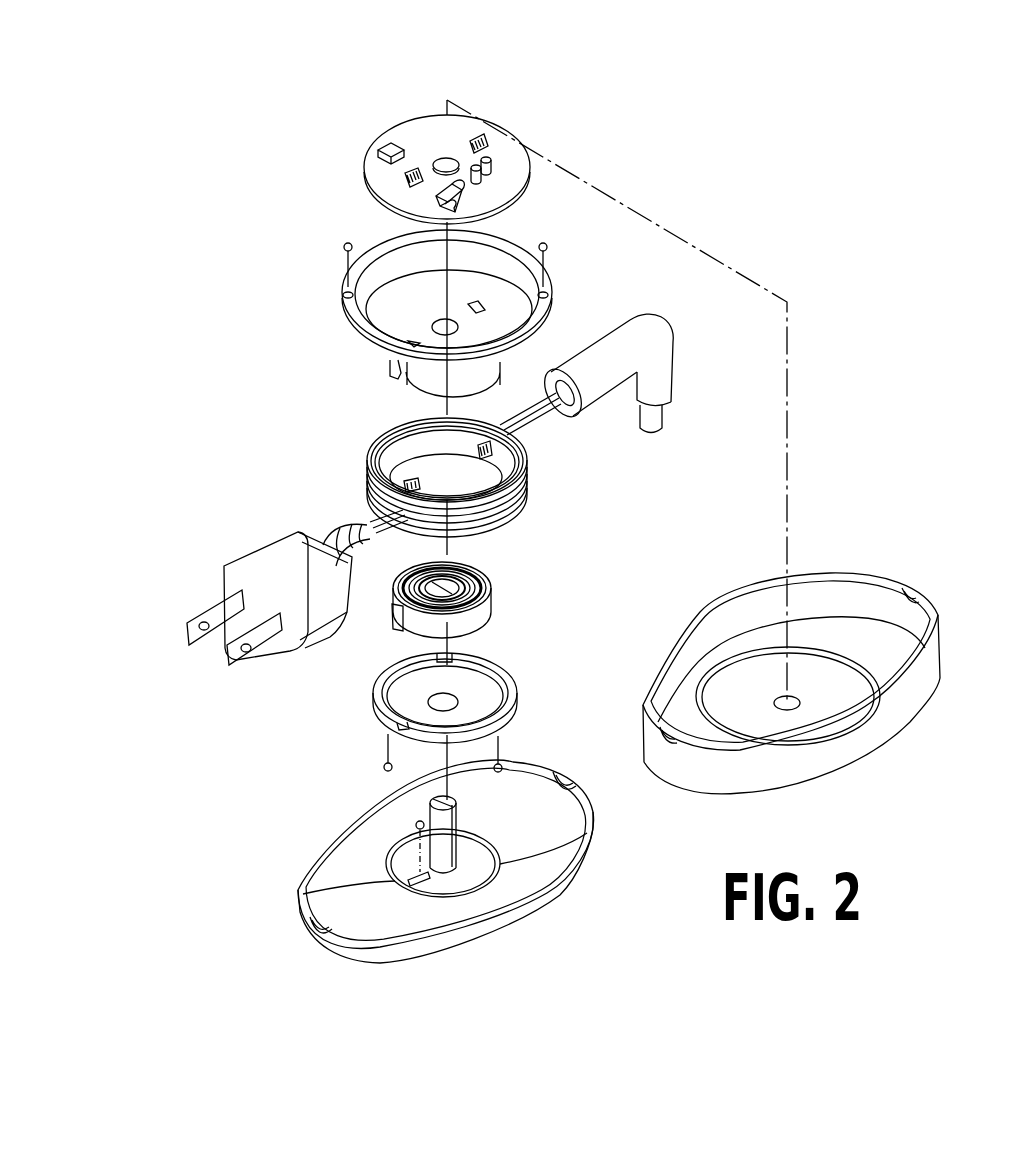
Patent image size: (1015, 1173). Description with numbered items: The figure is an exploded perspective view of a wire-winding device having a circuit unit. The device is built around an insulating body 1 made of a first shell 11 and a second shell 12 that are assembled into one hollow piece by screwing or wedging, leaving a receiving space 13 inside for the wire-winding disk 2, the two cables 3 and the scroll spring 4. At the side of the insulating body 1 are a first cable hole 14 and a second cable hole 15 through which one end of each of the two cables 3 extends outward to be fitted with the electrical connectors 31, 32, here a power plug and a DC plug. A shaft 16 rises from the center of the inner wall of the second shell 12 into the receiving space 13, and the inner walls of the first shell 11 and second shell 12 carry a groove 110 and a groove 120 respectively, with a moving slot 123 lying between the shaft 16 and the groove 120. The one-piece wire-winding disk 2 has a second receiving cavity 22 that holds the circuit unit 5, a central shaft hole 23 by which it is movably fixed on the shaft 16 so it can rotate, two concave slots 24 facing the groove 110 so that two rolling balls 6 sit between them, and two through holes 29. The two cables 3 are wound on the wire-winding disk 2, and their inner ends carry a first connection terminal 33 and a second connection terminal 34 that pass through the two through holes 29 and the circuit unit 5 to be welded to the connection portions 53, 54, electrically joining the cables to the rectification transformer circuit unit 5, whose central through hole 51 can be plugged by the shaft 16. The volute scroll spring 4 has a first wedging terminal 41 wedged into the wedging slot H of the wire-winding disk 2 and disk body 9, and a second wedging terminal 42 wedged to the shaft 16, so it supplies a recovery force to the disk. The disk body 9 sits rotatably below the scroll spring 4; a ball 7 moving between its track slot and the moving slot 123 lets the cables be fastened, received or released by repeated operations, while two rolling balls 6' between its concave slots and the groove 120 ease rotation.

The insulating body 1 is at (722, 820).
The first shell 11 is at (862, 756).
The groove 110 is at (808, 655).
The second shell 12 is at (545, 905).
The groove 120 is at (505, 862).
The moving slot 123 is at (404, 882).
The receiving space 13 is at (738, 620).
The first cable hole 14 is at (312, 928).
The second cable hole 15 is at (568, 784).
The shaft 16 is at (455, 815).
The wire-winding disk 2 is at (568, 318).
The second receiving cavity 22 is at (487, 278).
The shaft hole 23 is at (440, 328).
The concave slots 24 is at (345, 292).
The through holes 29 is at (486, 310).
The cables 3 is at (545, 478).
The electrical connector 31 is at (235, 560).
The electrical connector 32 is at (668, 385).
The first connection terminal 33 is at (408, 486).
The second connection terminal 34 is at (483, 450).
The scroll spring 4 is at (505, 589).
The first wedging terminal 41 is at (392, 628).
The second wedging terminal 42 is at (463, 576).
The circuit unit 5 is at (520, 128).
The through hole 51 is at (444, 156).
The connection portion 53 is at (410, 178).
The connection portion 54 is at (479, 135).
The rolling balls 6 is at (310, 230).
The rolling balls 6' is at (342, 767).
The ball 7 is at (412, 826).
The disk body 9 is at (365, 712).
The wedging slot H is at (395, 373).